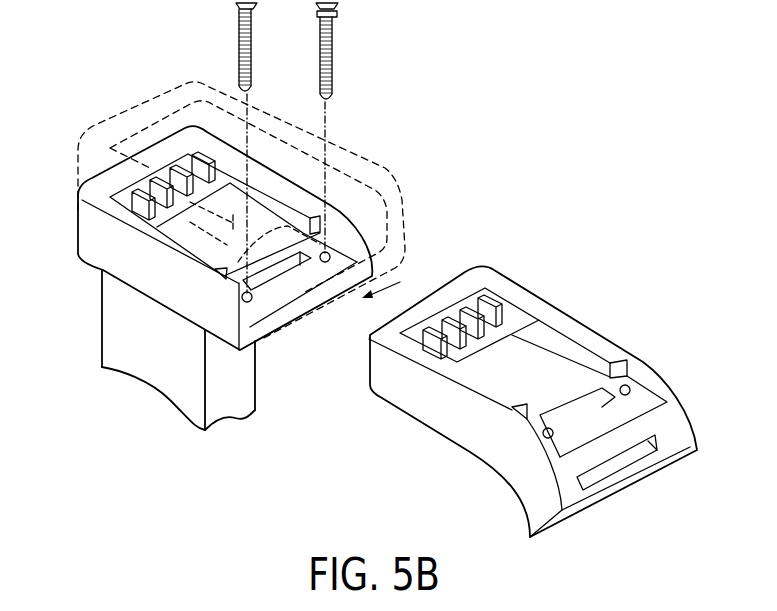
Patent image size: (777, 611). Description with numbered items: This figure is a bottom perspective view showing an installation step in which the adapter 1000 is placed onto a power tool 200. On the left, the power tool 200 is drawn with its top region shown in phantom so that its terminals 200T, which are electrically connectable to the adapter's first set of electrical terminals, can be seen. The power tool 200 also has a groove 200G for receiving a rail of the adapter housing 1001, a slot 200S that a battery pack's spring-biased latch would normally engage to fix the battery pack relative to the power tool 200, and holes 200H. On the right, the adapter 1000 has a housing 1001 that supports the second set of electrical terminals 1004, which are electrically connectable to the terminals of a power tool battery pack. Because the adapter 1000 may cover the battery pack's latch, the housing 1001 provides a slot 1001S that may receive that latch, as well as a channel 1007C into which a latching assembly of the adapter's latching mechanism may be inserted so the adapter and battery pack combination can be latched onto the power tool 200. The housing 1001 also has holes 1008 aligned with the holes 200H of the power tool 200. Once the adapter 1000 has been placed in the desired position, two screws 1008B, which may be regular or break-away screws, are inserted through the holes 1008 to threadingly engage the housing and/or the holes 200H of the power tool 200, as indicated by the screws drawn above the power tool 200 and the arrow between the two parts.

The power tool 200 is at (137, 357).
The terminals 200T is at (190, 160).
The groove 200G is at (219, 280).
The slot 200S is at (284, 272).
The holes 200H is at (240, 262).
The screws 1008B is at (333, 62).
The adapter 1000 is at (563, 280).
The housing 1001 is at (605, 343).
The second set of electrical terminals 1004 is at (493, 290).
The holes 1008 is at (628, 389).
The slot 1001S is at (570, 413).
The channel 1007C is at (652, 450).